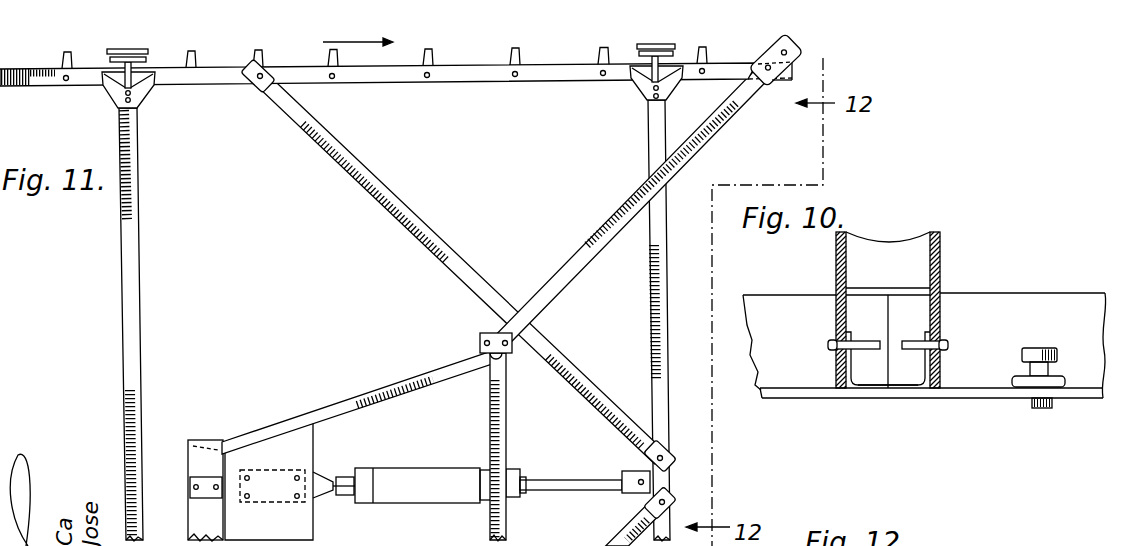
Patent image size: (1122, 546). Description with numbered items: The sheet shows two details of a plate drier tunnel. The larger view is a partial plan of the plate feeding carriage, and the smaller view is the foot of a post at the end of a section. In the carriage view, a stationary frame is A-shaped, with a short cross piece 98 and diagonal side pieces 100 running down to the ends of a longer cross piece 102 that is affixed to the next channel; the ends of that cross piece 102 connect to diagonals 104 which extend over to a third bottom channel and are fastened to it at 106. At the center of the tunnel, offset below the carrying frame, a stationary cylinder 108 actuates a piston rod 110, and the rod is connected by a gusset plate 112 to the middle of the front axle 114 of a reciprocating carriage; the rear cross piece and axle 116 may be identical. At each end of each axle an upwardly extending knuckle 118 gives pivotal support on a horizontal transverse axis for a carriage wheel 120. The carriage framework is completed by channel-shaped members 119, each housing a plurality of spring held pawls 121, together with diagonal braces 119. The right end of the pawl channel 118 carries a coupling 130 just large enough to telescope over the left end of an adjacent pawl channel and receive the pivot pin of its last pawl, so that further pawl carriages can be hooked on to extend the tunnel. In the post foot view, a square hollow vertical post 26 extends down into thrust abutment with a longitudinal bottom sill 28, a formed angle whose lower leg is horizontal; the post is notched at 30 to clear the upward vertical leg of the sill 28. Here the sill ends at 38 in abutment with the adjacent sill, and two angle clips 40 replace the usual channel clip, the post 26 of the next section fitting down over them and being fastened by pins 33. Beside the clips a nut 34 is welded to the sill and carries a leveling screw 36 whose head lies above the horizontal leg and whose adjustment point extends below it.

In FIG. 10, the vertical post 26 is at (918, 268).
In FIG. 10, the bottom sill 28 is at (806, 396).
In FIG. 10, the notch 30 is at (928, 305).
In FIG. 10, the pin 33 is at (866, 346).
In FIG. 10, the nut 34 is at (1012, 382).
In FIG. 10, the leveling screw 36 is at (1022, 364).
In FIG. 10, the sill end 38 is at (890, 388).
In FIG. 10, the angle clips 40 is at (880, 388).
In FIG. 11, the short cross piece 98 is at (203, 457).
In FIG. 11, the diagonal side pieces 100 is at (379, 392).
In FIG. 11, the longer cross piece 102 is at (503, 426).
In FIG. 11, the diagonals 104 is at (579, 250).
In FIG. 11, the fastening point 106 is at (790, 46).
In FIG. 11, the stationary cylinder 108 is at (426, 475).
In FIG. 11, the piston rod 110 is at (556, 484).
In FIG. 11, the gusset plate 112 is at (652, 491).
In FIG. 11, the front axle 114 is at (668, 348).
In FIG. 11, the rear cross piece and axle 116 is at (139, 355).
In FIG. 11, the knuckle 118 is at (381, 80).
In FIG. 11, the channel-shaped members 119 is at (448, 250).
In FIG. 11, the carriage wheel 120 is at (148, 52).
In FIG. 11, the spring held pawls 121 is at (436, 56).
In FIG. 11, the coupling 130 is at (794, 79).